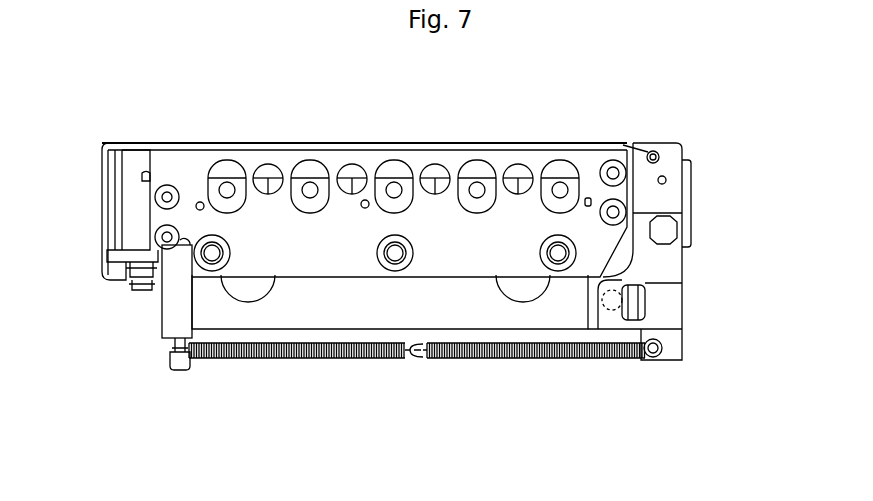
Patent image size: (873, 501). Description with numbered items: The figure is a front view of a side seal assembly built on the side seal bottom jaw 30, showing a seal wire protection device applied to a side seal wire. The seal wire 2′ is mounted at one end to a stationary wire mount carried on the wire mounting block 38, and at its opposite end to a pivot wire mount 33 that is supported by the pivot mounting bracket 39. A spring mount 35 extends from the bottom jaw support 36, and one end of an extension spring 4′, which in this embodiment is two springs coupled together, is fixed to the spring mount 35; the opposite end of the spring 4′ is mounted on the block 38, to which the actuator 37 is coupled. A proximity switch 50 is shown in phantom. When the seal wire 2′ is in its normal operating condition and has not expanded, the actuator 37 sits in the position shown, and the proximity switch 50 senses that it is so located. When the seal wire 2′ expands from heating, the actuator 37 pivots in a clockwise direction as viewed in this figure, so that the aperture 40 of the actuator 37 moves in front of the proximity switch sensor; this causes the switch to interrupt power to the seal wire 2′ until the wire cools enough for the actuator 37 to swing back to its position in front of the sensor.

The seal wire 2′ is at (268, 143).
The side seal bottom jaw 30 is at (606, 142).
The pivot wire mount 33 is at (665, 198).
The spring mount 35 is at (177, 308).
The bottom jaw support 36 is at (455, 315).
The actuator 37 is at (662, 288).
The wire mounting block 38 is at (127, 200).
The pivot mounting bracket 39 is at (690, 221).
The aperture 40 is at (655, 312).
The proximity switch 50 is at (620, 317).
The section line 4′ is at (655, 469).